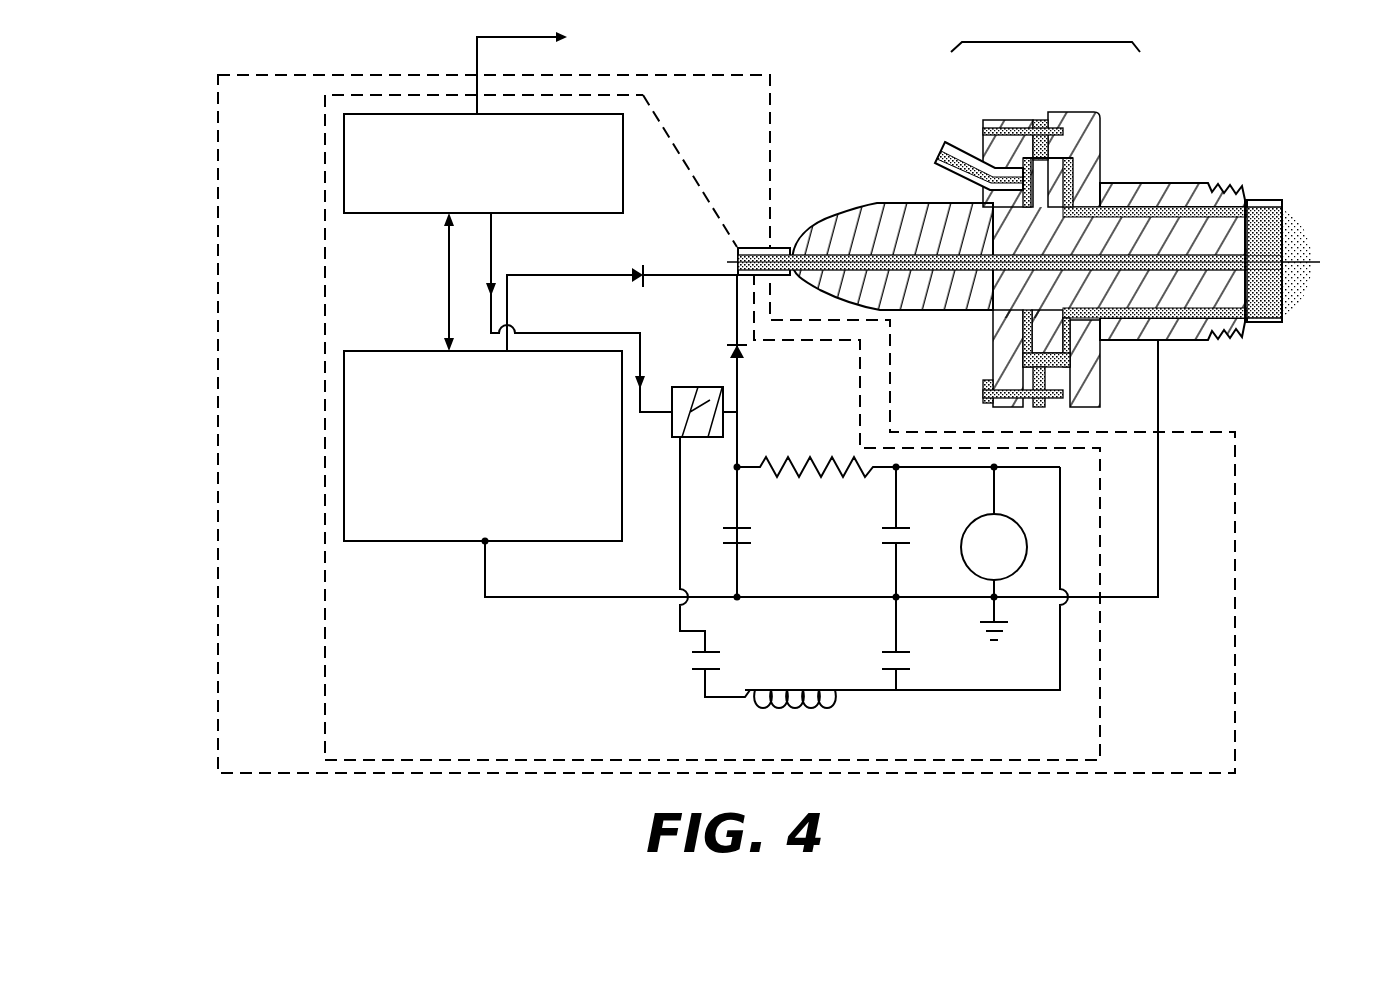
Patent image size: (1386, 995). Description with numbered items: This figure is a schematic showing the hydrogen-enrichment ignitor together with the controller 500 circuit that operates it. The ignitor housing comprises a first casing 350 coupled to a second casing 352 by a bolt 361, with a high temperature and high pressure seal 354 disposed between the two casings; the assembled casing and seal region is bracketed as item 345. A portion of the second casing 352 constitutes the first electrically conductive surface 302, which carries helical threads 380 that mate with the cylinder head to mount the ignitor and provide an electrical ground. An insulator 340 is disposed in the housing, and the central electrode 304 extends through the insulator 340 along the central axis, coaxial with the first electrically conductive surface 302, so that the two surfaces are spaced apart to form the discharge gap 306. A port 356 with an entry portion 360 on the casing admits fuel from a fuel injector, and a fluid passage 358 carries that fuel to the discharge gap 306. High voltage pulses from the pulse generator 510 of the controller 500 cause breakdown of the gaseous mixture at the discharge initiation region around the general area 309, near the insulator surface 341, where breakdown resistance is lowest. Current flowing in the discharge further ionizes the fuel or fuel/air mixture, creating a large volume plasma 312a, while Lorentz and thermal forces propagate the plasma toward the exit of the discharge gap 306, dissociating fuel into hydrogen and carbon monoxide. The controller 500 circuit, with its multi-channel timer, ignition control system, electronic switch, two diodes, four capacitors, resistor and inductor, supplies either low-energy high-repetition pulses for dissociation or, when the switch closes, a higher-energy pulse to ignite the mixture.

The first electrically conductive surface 302 is at (1273, 322).
The central electrode 304 is at (1282, 266).
The discharge gap 306 is at (1295, 240).
The discharge initiation region 309 is at (1255, 305).
The large volume plasma 312a is at (1290, 292).
The insulator 340 is at (812, 233).
The insulator surface 341 is at (1285, 245).
The seal assembly 345 is at (1045, 42).
The first casing 350 is at (1012, 120).
The second casing 352 is at (1093, 115).
The high temperature and high pressure seal 354 is at (1060, 118).
The port 356 is at (932, 152).
The fluid passage 358 is at (1165, 197).
The entry portion 360 is at (960, 196).
The bolt 361 is at (983, 395).
The helical threads 380 is at (1270, 198).
The controller 500 is at (727, 143).
The pulse generator 510 is at (360, 296).